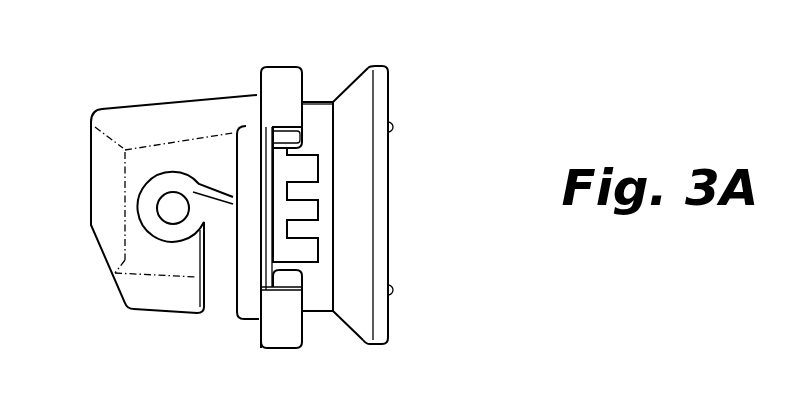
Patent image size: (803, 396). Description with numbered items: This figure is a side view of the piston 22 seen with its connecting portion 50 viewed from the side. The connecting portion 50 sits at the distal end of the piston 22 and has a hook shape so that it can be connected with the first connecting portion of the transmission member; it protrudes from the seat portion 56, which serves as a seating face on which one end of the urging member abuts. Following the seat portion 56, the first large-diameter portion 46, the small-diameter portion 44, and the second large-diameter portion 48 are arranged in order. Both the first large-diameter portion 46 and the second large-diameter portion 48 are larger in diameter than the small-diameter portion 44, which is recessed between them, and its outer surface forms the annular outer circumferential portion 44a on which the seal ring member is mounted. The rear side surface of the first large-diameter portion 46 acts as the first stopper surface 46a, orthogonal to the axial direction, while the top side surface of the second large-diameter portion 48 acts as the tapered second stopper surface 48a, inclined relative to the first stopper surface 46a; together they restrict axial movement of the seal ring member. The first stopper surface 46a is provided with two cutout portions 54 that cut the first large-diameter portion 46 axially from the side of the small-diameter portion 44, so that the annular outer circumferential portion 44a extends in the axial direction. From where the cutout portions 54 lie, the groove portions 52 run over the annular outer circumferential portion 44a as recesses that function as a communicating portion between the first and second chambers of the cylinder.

The piston 22 is at (262, 384).
The small-diameter portion 44 is at (327, 92).
The annular outer circumferential portion 44a is at (317, 137).
The first large-diameter portion 46 is at (278, 72).
The first stopper surface 46a is at (315, 110).
The second large-diameter portion 48 is at (381, 78).
The second stopper surface 48a is at (360, 190).
The connecting portion 50 is at (147, 157).
The groove portions 52 is at (307, 249).
The cutout portions 54 is at (293, 170).
The seat portion 56 is at (265, 223).